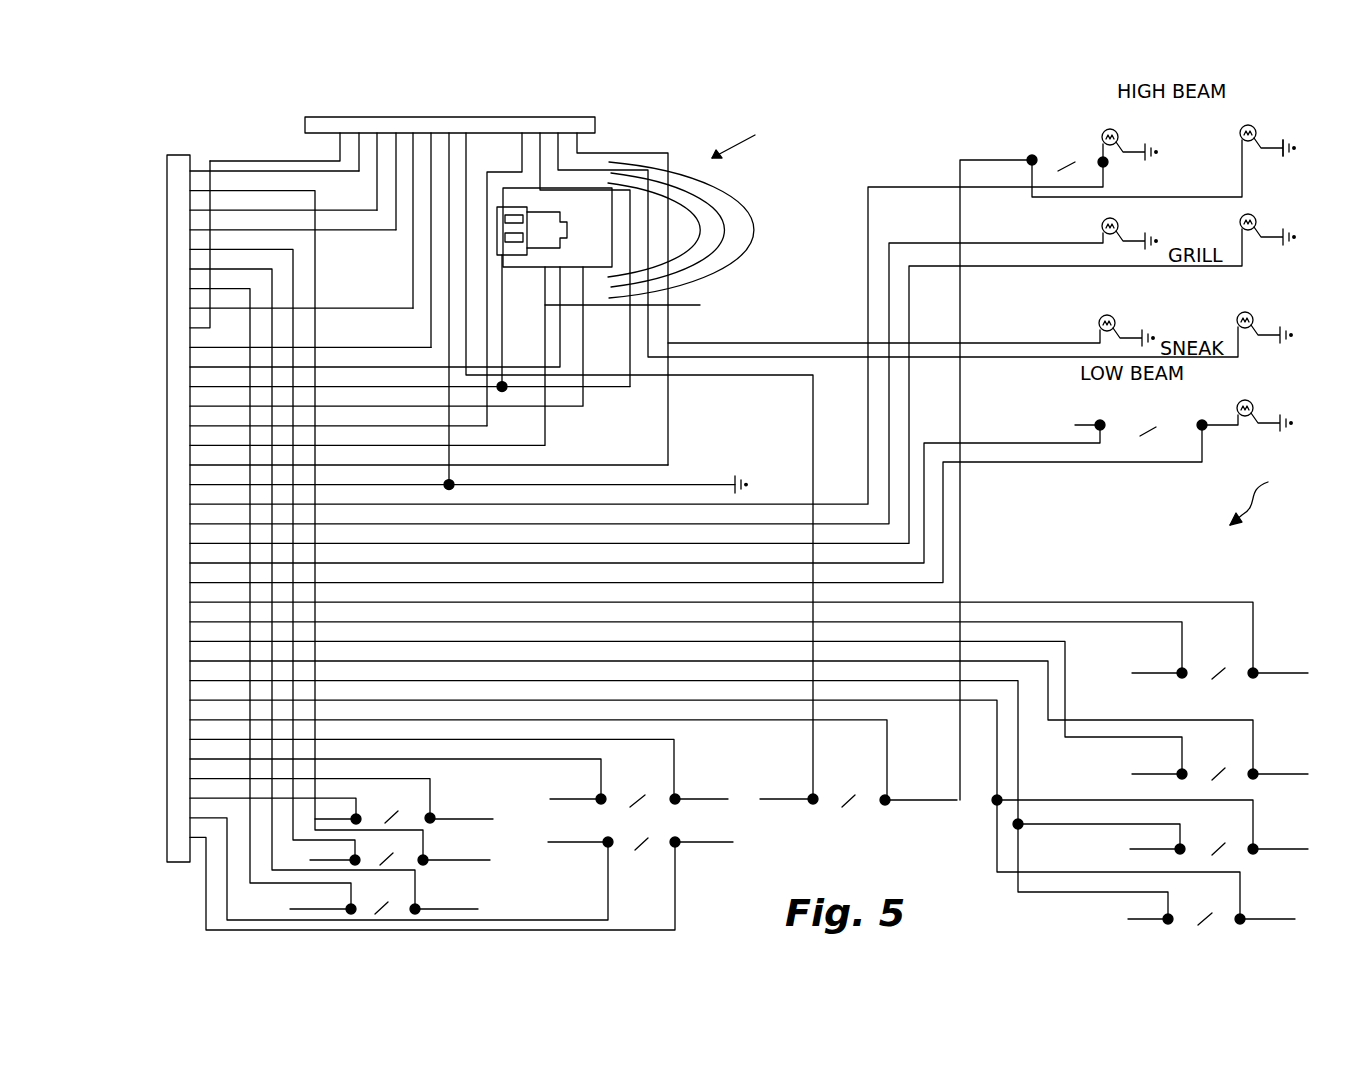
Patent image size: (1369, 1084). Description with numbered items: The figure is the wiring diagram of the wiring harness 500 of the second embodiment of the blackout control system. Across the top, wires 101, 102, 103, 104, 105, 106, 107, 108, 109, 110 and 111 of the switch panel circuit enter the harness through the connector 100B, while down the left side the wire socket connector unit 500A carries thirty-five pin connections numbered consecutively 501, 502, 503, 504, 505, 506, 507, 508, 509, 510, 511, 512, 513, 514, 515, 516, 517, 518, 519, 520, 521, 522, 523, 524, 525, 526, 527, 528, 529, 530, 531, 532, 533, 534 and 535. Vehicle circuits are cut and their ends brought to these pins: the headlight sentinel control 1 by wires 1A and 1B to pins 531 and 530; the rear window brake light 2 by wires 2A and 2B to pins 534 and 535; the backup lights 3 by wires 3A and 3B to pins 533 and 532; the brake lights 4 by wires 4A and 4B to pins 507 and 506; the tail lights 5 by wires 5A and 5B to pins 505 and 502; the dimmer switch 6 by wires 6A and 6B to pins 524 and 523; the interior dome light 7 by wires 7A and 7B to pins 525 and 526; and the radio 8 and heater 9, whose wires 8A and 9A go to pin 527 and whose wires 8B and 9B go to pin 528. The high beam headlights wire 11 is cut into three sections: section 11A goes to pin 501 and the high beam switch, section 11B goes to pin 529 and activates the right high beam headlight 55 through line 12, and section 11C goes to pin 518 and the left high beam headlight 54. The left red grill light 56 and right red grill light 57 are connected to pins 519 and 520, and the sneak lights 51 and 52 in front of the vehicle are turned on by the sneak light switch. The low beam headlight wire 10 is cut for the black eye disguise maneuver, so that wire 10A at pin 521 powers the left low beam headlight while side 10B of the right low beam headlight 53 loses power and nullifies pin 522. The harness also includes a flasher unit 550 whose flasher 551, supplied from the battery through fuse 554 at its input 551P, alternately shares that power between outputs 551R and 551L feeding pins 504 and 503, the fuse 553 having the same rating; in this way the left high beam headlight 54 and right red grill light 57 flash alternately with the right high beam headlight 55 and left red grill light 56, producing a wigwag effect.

The wiring harness 500 is at (1272, 496).
The wire socket connector unit 500A is at (183, 153).
The controller connector 100B is at (598, 127).
The wire 101 is at (280, 118).
The wire 102 is at (359, 123).
The wire 103 is at (377, 143).
The wire 104 is at (396, 153).
The wire 105 is at (413, 192).
The wire 106 is at (431, 212).
The wire 107 is at (631, 437).
The wire 108 is at (505, 251).
The wire 109 is at (577, 231).
The wire 110 is at (890, 216).
The wire 111 is at (830, 270).
The pin connection 501 is at (241, 162).
The pin connection 502 is at (273, 515).
The pin connection 503 is at (250, 201).
The pin connection 504 is at (260, 221).
The pin connection 505 is at (239, 544).
The pin connection 506 is at (269, 578).
The pin connection 507 is at (237, 588).
The pin connection 508 is at (268, 299).
The pin connection 509 is at (167, 246).
The pin connection 510 is at (277, 338).
The pin connection 511 is at (342, 318).
The pin connection 512 is at (377, 323).
The pin connection 513 is at (353, 338).
The pin connection 514 is at (305, 416).
The pin connection 515 is at (334, 357).
The pin connection 516 is at (396, 456).
The pin connection 517 is at (435, 478).
The pin connection 518 is at (613, 325).
The pin connection 519 is at (613, 379).
The pin connection 520 is at (683, 387).
The pin connection 521 is at (612, 495).
The pin connection 522 is at (663, 505).
The pin connection 523 is at (688, 627).
The pin connection 524 is at (653, 636).
The pin connection 525 is at (653, 697).
The pin connection 526 is at (688, 707).
The pin connection 527 is at (652, 789).
The pin connection 528 is at (688, 799).
The pin connection 529 is at (505, 749).
The pin connection 530 is at (399, 758).
The pin connection 531 is at (362, 768).
The pin connection 532 is at (277, 787).
The pin connection 533 is at (240, 798).
The pin connection 534 is at (366, 858).
The pin connection 535 is at (399, 873).
The flasher unit 550 is at (756, 135).
The flasher 551 is at (640, 227).
The flasher output 551R is at (712, 182).
The flasher output 551L is at (700, 208).
The flasher input 551P is at (632, 262).
The fuse 553 is at (715, 290).
The fuse 554 is at (548, 212).
The headlight sentinel control 1 is at (710, 797).
The wire 1A is at (578, 787).
The wire 1B is at (699, 787).
The rear window brake light 2 is at (718, 840).
The wire 2A is at (580, 851).
The wire 2B is at (701, 851).
The backup lights 3 is at (480, 815).
The wire 3A is at (338, 809).
The wire 3B is at (459, 809).
The brake lights 4 is at (470, 908).
The wire 4A is at (323, 899).
The wire 4B is at (444, 899).
The tail lights 5 is at (478, 858).
The wire 5A is at (335, 850).
The wire 5B is at (454, 850).
The dimmer switch 6 is at (1293, 672).
The wire 6A is at (1159, 662).
The wire 6B is at (1278, 662).
The interior dome light 7 is at (1293, 773).
The wire 7A is at (1159, 763).
The wire 7B is at (1278, 763).
The radio 8 is at (1293, 848).
The wire 8A is at (1157, 838).
The wire 8B is at (1278, 838).
The heater 9 is at (1283, 918).
The wire 9A is at (1150, 908).
The wire 9B is at (1265, 908).
The low beam headlight wire 10 is at (1080, 421).
The wire 10A is at (1082, 435).
The wire side 10B is at (1223, 433).
The high beam headlights wire 11 is at (932, 800).
The wire section 11A is at (789, 787).
The wire section 11B is at (956, 482).
The wire section 11C is at (1134, 167).
The wire 12 is at (1278, 163).
The sneak light 51 is at (1099, 318).
The sneak light 52 is at (1238, 315).
The right low beam headlight 53 is at (1238, 403).
The left high beam headlight 54 is at (1102, 132).
The right high beam headlight 55 is at (1241, 128).
The left red grill light 56 is at (1102, 221).
The right red grill light 57 is at (1241, 217).